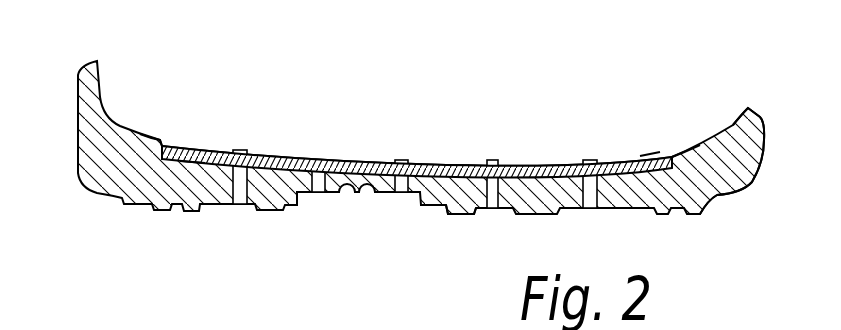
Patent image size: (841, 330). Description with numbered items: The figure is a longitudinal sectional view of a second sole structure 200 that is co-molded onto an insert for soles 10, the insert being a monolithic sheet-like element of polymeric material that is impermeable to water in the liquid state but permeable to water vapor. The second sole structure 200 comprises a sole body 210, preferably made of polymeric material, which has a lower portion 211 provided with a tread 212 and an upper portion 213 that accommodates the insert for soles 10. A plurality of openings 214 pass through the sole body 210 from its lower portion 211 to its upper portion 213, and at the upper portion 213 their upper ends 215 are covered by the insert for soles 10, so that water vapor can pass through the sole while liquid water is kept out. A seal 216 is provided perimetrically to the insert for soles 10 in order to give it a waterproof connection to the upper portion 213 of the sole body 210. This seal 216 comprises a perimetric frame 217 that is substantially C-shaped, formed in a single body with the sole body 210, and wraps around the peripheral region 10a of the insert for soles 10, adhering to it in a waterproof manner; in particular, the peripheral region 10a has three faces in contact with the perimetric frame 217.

The second sole structure 200 is at (74, 182).
The sole body 210 is at (766, 150).
The lower portion 211 is at (697, 215).
The tread 212 is at (463, 214).
The upper portion 213 is at (735, 137).
The openings 214 is at (243, 197).
The upper ends 215 is at (317, 188).
The seal 216 is at (650, 154).
The perimetric frame 217 is at (155, 151).
The insert for soles 10 is at (518, 163).
The peripheral region 10a is at (202, 155).